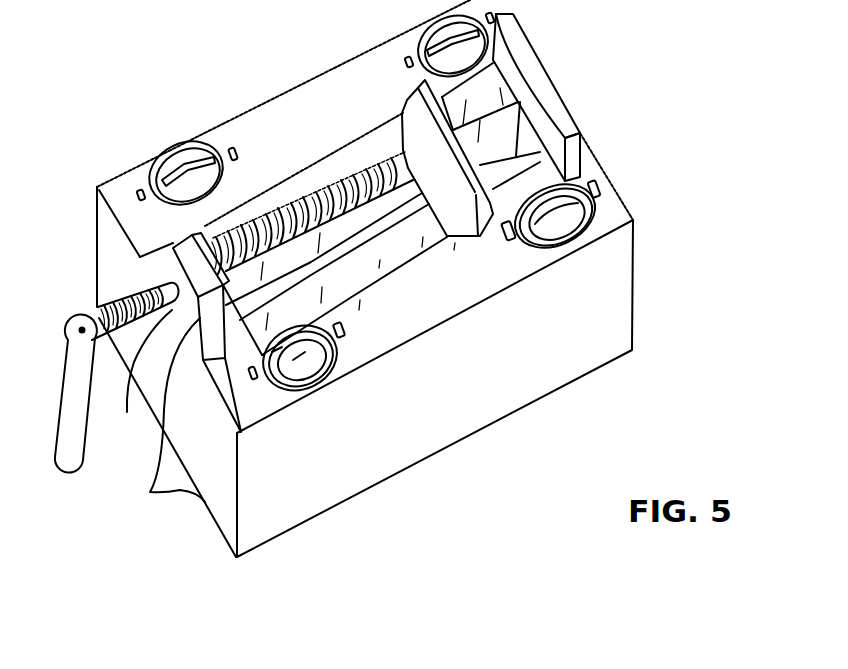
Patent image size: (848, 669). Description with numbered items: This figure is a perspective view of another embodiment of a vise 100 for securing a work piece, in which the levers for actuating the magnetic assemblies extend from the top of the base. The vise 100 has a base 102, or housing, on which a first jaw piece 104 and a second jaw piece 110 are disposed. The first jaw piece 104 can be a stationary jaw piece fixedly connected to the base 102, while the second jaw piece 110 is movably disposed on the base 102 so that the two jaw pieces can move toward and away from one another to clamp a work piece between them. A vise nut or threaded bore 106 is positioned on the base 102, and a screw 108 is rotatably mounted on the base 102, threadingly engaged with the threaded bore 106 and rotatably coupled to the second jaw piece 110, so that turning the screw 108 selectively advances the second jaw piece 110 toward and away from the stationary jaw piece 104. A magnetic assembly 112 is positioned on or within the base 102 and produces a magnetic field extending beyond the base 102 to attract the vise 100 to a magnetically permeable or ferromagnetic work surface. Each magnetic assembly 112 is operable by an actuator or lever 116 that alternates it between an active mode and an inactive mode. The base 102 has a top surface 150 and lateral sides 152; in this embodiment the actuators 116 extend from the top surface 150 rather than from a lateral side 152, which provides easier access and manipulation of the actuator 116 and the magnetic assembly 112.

The vise 100 is at (380, 296).
The base 102 is at (150, 500).
The first jaw piece 104 is at (580, 120).
The vise nut or threaded bore 106 is at (144, 374).
The screw 108 is at (96, 307).
The second jaw piece 110 is at (416, 100).
The magnetic assembly 112 is at (122, 162).
The actuator or lever 116 is at (183, 163).
The top surface 150 is at (274, 117).
The lateral sides 152 is at (605, 305).